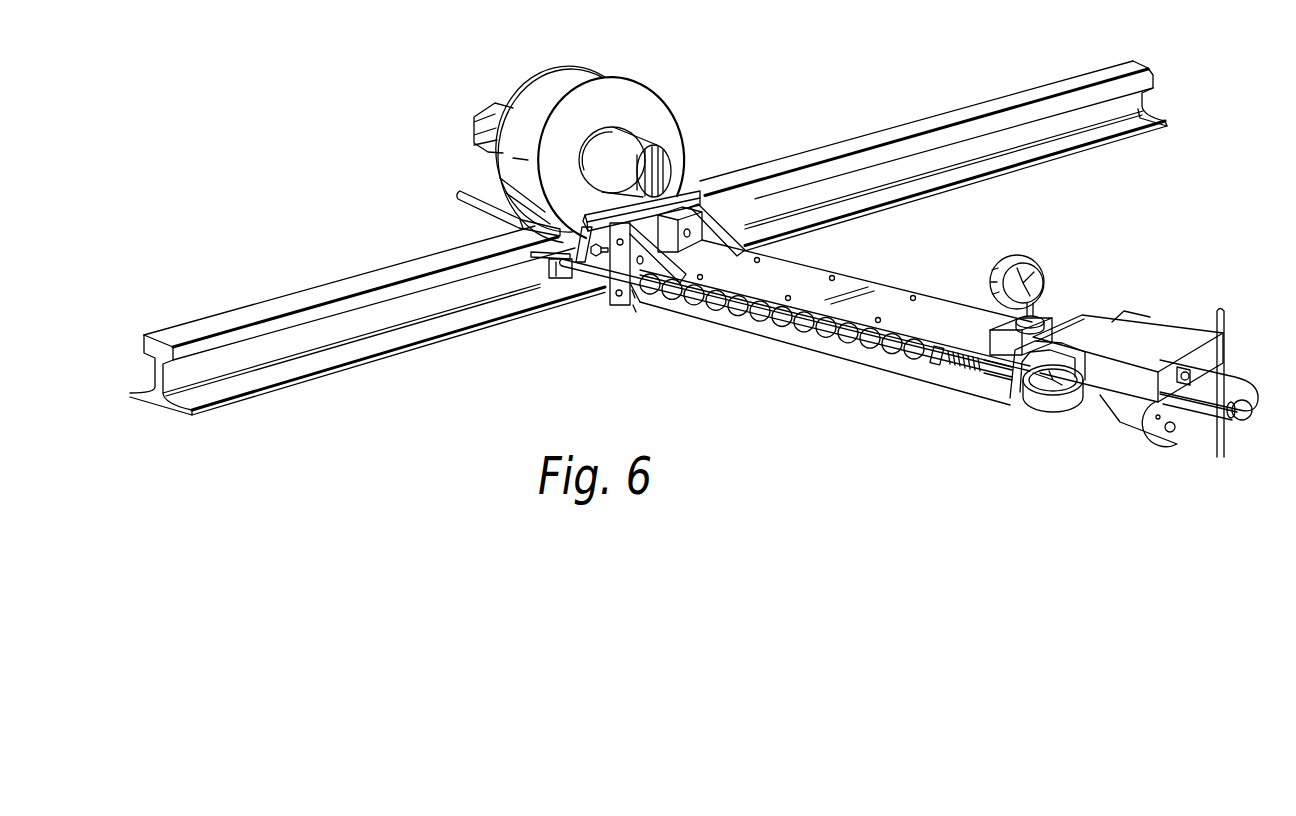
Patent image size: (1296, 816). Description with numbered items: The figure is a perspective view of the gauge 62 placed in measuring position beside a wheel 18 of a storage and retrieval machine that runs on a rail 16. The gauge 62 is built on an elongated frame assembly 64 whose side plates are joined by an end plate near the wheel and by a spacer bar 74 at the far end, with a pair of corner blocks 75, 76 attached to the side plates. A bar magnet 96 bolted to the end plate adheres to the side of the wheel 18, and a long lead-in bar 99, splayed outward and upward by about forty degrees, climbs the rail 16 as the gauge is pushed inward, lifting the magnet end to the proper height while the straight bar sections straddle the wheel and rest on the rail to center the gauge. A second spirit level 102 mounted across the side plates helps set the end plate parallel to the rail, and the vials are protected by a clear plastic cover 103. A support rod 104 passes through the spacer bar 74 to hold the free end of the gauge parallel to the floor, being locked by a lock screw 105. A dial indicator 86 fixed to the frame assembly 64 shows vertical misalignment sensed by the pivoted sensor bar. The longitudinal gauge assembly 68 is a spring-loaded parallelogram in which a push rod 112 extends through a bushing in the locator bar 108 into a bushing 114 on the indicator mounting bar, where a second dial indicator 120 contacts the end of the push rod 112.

The rail 16 is at (258, 300).
The wheel 18 is at (670, 112).
The lead-in bar 99 is at (463, 203).
The bar magnet 96 is at (600, 213).
The corner block 75 is at (770, 228).
The corner block 76 is at (610, 275).
The locator bar 108 is at (545, 278).
The gauge 62 is at (880, 276).
The frame assembly 64 is at (853, 365).
The push rod 112 is at (698, 313).
The longitudinal gauge assembly 68 is at (900, 360).
The bushing 114 is at (995, 378).
The dial indicator 86 is at (1050, 275).
The clear plastic cover 103 is at (1156, 322).
The support rod 104 is at (1228, 316).
The spacer bar 74 is at (1215, 432).
The second spirit level 102 is at (1205, 430).
The lock screw 105 is at (1243, 420).
The second dial indicator 120 is at (1066, 405).